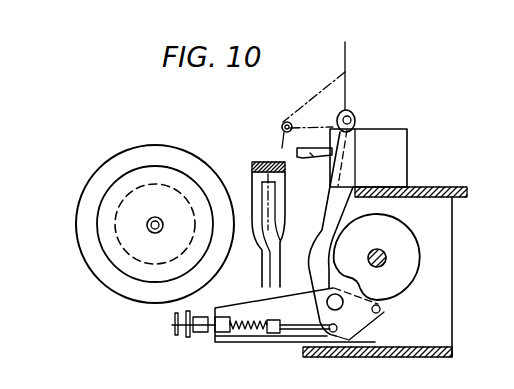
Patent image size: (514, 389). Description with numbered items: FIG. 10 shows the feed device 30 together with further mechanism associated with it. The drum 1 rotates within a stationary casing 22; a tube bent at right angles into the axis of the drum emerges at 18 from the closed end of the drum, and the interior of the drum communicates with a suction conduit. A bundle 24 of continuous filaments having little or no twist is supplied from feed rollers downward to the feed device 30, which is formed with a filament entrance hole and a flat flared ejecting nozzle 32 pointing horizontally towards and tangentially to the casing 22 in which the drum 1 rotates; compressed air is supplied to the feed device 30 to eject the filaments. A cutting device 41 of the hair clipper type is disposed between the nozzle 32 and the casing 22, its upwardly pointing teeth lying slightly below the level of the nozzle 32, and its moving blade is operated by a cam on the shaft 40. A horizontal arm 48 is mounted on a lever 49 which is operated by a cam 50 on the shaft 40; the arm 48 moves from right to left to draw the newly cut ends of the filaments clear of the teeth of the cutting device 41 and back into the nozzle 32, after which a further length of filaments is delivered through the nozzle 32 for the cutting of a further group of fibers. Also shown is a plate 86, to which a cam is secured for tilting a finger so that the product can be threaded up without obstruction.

The drum 1 is at (125, 200).
The emergence point of tube 18 is at (152, 233).
The stationary casing 22 is at (102, 208).
The bundle of continuous filaments 24 is at (346, 54).
The feed device 30 is at (368, 158).
The ejecting nozzle 32 is at (310, 158).
The shaft 40 is at (369, 250).
The cutting device 41 is at (252, 188).
The horizontal arm 48 is at (282, 125).
The lever 49 is at (318, 208).
The cam 50 is at (377, 257).
The plate 86 is at (428, 190).